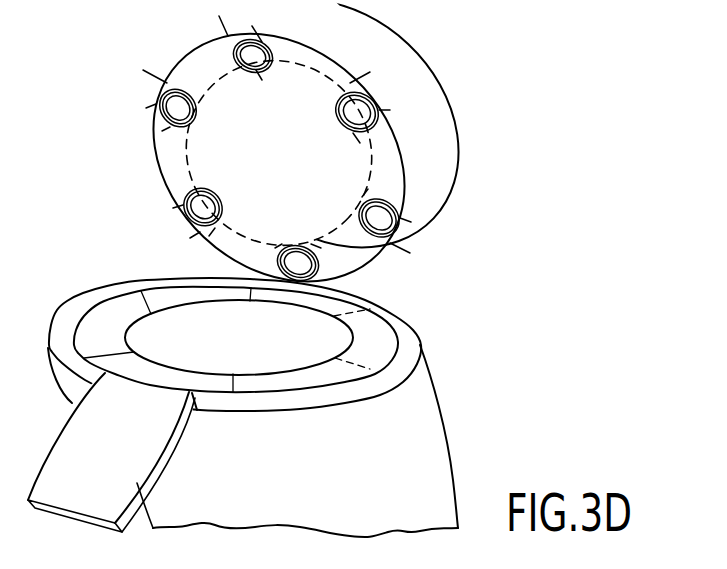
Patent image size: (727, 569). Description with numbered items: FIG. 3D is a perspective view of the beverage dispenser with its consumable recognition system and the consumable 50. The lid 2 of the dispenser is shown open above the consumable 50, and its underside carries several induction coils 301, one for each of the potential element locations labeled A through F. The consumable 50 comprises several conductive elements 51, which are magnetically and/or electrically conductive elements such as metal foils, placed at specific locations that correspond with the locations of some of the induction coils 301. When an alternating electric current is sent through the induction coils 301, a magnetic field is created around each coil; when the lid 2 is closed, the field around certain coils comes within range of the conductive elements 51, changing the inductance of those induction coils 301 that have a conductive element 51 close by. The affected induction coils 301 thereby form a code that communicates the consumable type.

The lid 2 is at (436, 76).
The consumable 50 is at (404, 328).
The conductive elements 51 is at (80, 330).
The induction coils 301 is at (172, 180).